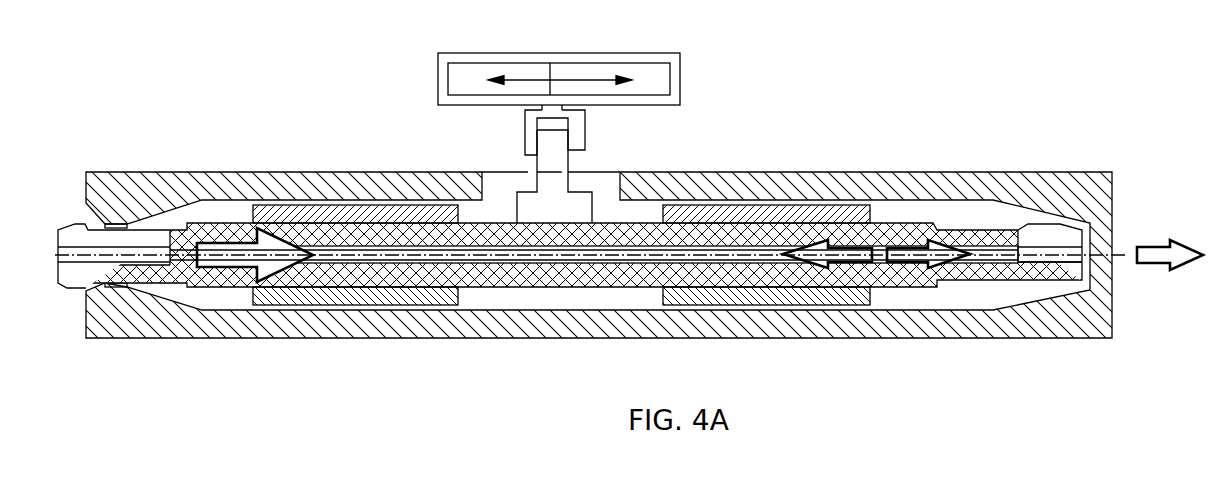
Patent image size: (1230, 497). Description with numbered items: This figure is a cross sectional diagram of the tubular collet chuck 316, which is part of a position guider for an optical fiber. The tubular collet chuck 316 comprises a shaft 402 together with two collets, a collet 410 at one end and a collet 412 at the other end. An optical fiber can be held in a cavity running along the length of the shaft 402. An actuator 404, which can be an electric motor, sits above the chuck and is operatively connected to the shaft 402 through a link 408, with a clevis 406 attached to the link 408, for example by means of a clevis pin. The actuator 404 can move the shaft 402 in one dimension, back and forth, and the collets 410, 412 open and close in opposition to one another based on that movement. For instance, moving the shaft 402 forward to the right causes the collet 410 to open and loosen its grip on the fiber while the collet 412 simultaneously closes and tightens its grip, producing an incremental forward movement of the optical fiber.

The tubular collet chuck 316 is at (730, 338).
The shaft 402 is at (540, 287).
The actuator 404 is at (656, 53).
The clevis 406 is at (525, 136).
The link 408 is at (570, 161).
The collet 410 is at (67, 289).
The collet 412 is at (1042, 281).